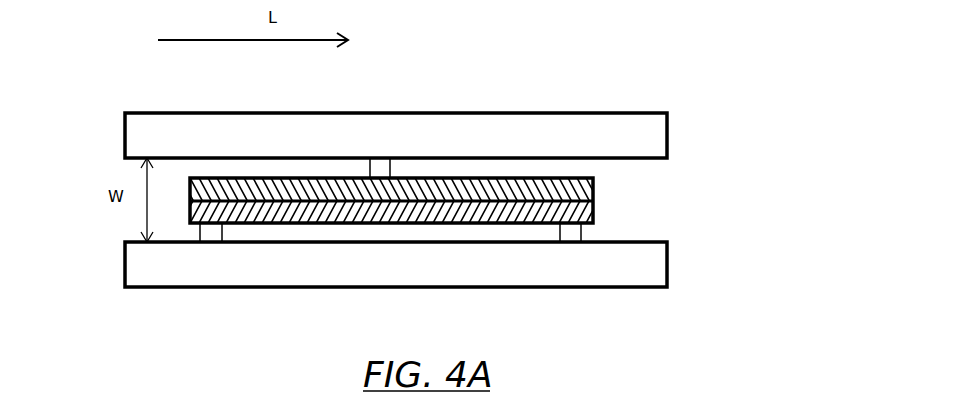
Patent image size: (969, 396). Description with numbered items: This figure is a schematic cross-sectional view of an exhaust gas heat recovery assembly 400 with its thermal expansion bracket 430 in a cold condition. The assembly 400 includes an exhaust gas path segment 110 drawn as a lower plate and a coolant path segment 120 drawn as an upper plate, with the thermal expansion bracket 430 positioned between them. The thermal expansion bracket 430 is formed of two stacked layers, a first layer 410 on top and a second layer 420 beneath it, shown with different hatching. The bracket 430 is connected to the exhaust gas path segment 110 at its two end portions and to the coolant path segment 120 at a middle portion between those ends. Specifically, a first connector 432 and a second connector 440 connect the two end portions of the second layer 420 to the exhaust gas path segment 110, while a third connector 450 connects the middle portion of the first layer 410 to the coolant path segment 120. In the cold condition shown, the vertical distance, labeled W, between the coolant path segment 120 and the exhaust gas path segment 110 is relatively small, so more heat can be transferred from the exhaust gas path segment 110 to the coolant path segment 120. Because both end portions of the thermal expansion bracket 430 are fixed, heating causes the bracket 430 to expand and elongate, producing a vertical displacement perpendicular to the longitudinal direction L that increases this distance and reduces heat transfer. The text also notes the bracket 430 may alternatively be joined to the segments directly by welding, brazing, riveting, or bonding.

The exhaust gas heat recovery assembly 400 is at (732, 210).
The exhaust gas path segment 110 is at (448, 268).
The coolant path segment 120 is at (517, 127).
The first layer 410 is at (594, 189).
The second layer 420 is at (594, 210).
The thermal expansion bracket 430 is at (375, 170).
The first connector 432 is at (212, 231).
The second connector 440 is at (572, 231).
The third connector 450 is at (385, 167).